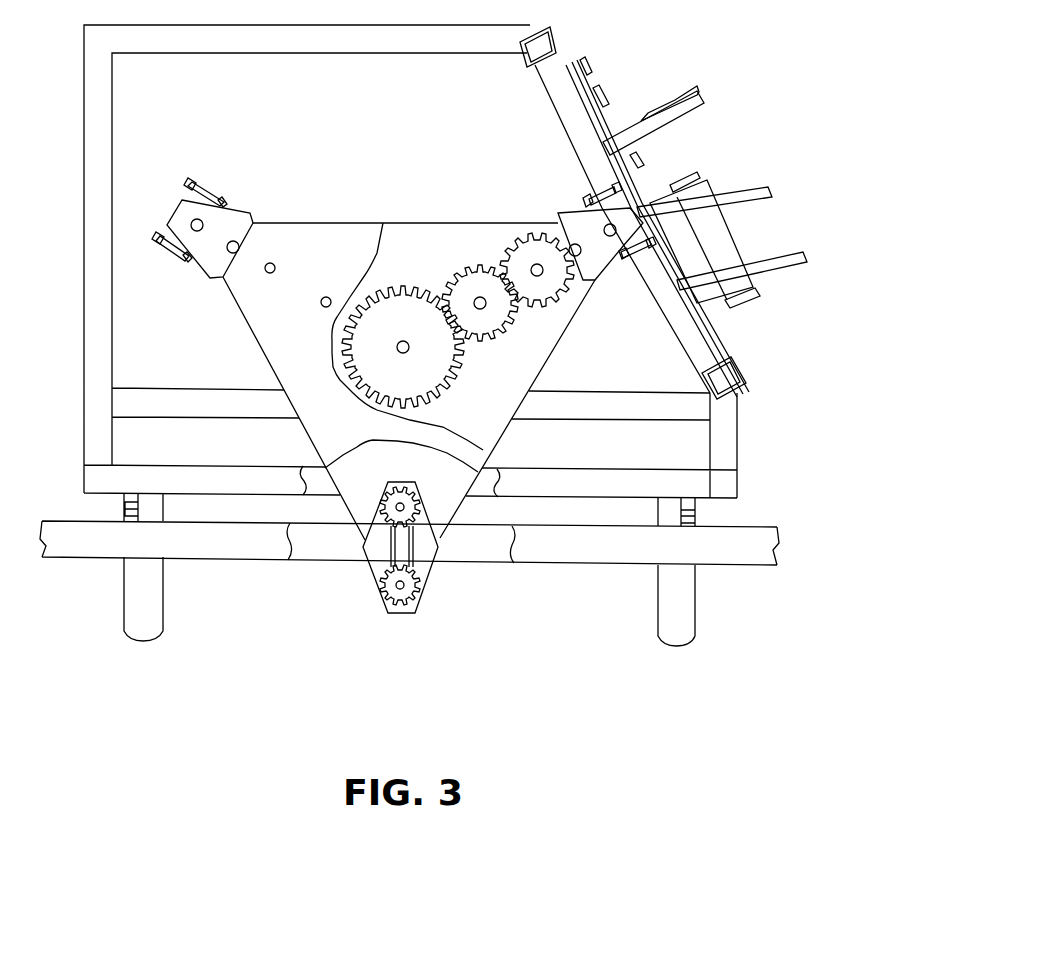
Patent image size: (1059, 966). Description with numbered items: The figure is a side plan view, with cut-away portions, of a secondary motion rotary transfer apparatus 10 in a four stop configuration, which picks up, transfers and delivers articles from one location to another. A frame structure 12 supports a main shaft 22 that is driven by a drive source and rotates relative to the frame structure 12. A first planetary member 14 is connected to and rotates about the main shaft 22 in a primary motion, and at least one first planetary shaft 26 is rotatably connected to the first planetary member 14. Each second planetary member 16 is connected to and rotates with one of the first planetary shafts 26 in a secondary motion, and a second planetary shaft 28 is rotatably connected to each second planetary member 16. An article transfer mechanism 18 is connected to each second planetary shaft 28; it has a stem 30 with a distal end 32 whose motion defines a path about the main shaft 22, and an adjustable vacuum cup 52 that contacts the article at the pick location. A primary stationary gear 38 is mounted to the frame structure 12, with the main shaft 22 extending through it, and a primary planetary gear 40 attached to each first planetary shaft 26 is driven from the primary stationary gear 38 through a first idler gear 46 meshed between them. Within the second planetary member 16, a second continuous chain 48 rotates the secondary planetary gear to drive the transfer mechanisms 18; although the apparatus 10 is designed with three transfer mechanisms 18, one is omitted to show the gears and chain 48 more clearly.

The rotary transfer apparatus 10 is at (570, 603).
The frame structure 12 is at (98, 122).
The first planetary member 14 is at (381, 222).
The second planetary member 16 is at (208, 284).
The article transfer mechanism 18 is at (220, 181).
The main shaft 22 is at (400, 350).
The first planetary shaft 26 is at (537, 265).
The second planetary shaft 28 is at (404, 588).
The stem 30 is at (172, 258).
The distal end 32 is at (153, 240).
The primary stationary gear 38 is at (455, 403).
The primary planetary gear 40 is at (545, 305).
The first idler gear 46 is at (472, 283).
The second continuous chain 48 is at (392, 548).
The adjustable vacuum cup 52 is at (190, 183).